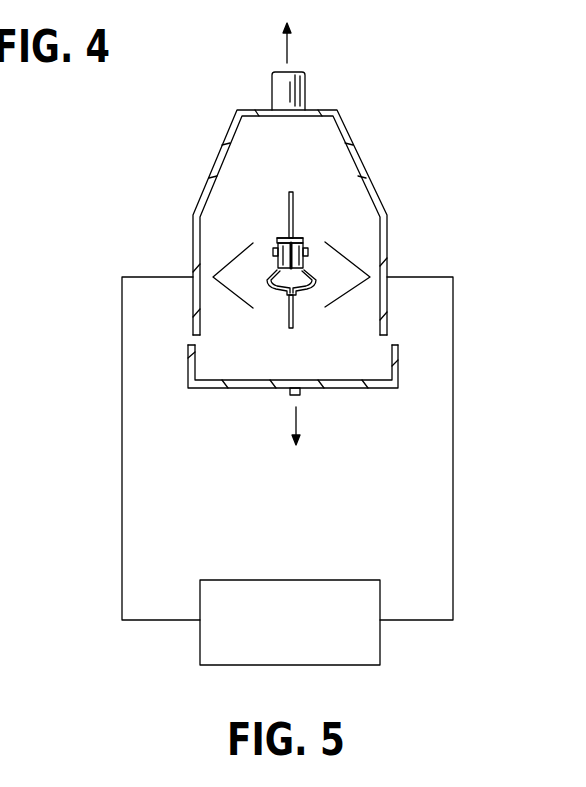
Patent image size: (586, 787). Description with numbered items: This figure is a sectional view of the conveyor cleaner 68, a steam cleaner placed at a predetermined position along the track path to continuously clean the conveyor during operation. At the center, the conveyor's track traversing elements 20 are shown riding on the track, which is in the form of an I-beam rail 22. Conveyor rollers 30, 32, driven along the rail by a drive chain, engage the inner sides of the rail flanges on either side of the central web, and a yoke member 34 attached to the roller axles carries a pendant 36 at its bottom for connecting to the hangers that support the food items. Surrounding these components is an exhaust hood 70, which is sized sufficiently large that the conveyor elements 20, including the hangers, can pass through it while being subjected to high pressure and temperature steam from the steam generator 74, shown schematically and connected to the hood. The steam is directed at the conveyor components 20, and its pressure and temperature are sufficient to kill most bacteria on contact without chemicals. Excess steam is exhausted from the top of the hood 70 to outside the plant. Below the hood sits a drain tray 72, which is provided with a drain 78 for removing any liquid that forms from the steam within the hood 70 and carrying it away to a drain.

The track traversing elements 20 is at (262, 208).
The I-beam rail 22 is at (300, 238).
The conveyor roller 30 is at (276, 243).
The conveyor roller 32 is at (304, 243).
The yoke member 34 is at (309, 262).
The pendant 36 is at (300, 322).
The conveyor cleaner 68 is at (70, 258).
The exhaust hood 70 is at (271, 86).
The drain tray 72 is at (393, 368).
The steam generator 74 is at (338, 665).
The drain 78 is at (305, 390).